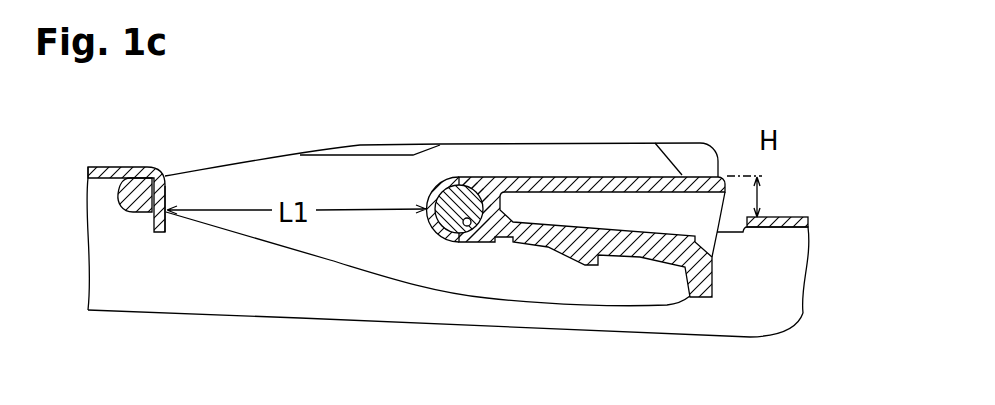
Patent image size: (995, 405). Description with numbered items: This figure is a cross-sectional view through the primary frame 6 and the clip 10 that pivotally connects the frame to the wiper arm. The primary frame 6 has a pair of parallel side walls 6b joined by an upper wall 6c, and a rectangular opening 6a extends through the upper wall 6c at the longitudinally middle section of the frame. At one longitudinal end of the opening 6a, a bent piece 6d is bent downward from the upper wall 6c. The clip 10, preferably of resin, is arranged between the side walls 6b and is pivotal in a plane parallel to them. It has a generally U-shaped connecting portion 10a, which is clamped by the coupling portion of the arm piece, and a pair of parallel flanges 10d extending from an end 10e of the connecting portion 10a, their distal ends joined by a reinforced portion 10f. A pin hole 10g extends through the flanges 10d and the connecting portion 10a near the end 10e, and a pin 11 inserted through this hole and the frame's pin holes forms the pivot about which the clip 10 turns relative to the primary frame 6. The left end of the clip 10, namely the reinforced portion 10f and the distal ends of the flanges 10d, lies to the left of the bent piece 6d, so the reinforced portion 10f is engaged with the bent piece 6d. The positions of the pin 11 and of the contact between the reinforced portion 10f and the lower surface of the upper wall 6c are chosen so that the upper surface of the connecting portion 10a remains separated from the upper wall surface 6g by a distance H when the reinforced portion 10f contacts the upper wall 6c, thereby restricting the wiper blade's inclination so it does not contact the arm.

The primary frame 6 is at (821, 224).
The rectangular opening 6a is at (368, 148).
The side walls 6b is at (323, 312).
The upper wall 6c is at (120, 167).
The bent piece 6d is at (167, 190).
The upper wall surface 6g is at (787, 215).
The clip 10 is at (680, 150).
The connecting portion 10a is at (520, 182).
The flanges 10d is at (263, 242).
The end of the connecting portion 10e is at (427, 218).
The reinforced portion 10f is at (130, 207).
The pin hole 10g is at (468, 226).
The pin 11 is at (458, 190).